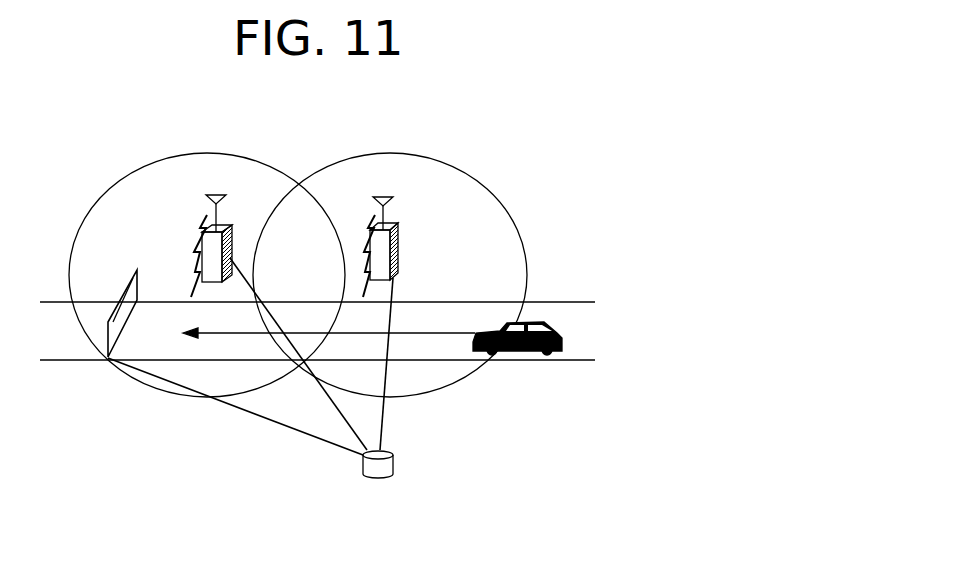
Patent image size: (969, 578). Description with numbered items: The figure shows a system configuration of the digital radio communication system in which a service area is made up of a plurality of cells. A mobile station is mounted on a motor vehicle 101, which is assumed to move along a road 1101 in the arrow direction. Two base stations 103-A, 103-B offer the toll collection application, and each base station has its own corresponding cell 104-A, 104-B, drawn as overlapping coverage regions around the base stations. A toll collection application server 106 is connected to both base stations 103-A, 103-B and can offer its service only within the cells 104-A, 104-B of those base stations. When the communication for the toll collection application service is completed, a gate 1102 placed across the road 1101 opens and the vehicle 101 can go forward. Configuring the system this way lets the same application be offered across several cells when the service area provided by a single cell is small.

The motor vehicle 101 is at (527, 352).
The base station 103-A is at (232, 248).
The base station 103-B is at (398, 248).
The cell 104-A is at (192, 203).
The cell 104-B is at (397, 191).
The toll collection application server 106 is at (378, 478).
The road 1101 is at (60, 362).
The gate 1102 is at (122, 322).